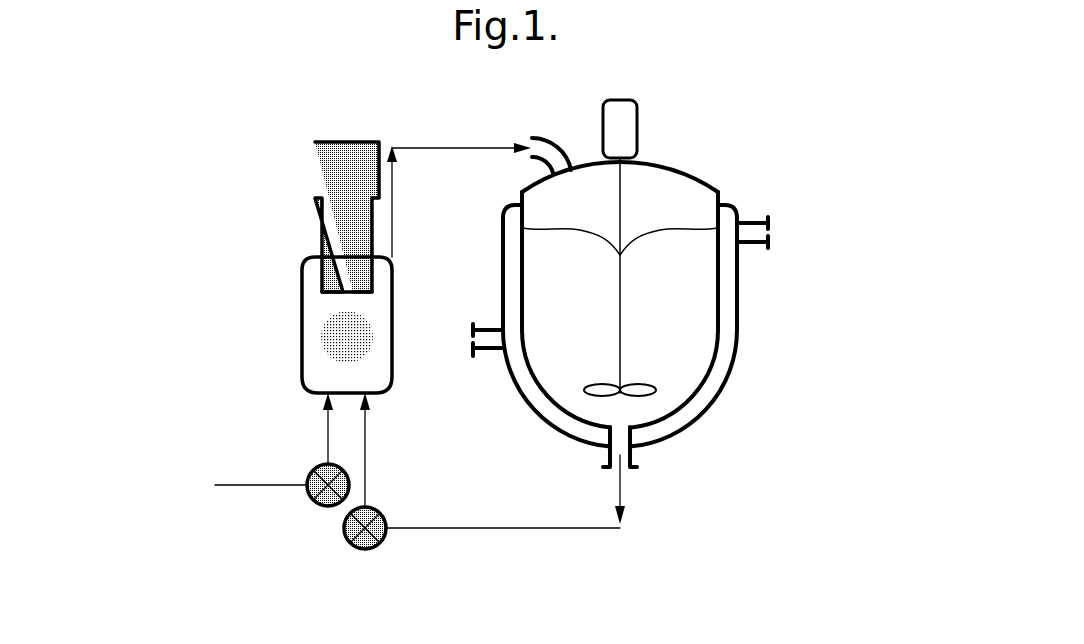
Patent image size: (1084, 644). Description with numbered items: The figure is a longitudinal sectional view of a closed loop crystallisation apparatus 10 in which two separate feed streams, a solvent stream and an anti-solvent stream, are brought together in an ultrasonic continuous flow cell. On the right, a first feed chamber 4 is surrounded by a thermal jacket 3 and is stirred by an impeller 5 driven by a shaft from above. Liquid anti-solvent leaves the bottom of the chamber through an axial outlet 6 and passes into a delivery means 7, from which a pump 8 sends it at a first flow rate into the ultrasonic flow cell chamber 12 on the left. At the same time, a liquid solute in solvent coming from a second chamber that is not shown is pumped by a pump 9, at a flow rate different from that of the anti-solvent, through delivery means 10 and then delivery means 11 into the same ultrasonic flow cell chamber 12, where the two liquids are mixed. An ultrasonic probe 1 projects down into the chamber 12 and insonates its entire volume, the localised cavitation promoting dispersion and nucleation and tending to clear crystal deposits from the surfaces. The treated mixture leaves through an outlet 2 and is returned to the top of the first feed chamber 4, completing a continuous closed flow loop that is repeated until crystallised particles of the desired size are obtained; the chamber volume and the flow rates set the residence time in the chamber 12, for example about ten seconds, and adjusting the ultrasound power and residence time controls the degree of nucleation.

The ultrasonic probe 1 is at (322, 222).
The outlet 2 is at (453, 148).
The thermal jacket 3 is at (726, 272).
The first feed chamber 4 is at (738, 324).
The impeller 5 is at (622, 360).
The axial outlet 6 is at (636, 452).
The delivery means 7 is at (507, 528).
The pump 8 is at (367, 550).
The pump 9 is at (320, 506).
The crystallisation apparatus / delivery means 10 is at (266, 117).
The delivery means 11 is at (365, 433).
The ultrasonic flow cell chamber 12 is at (302, 323).